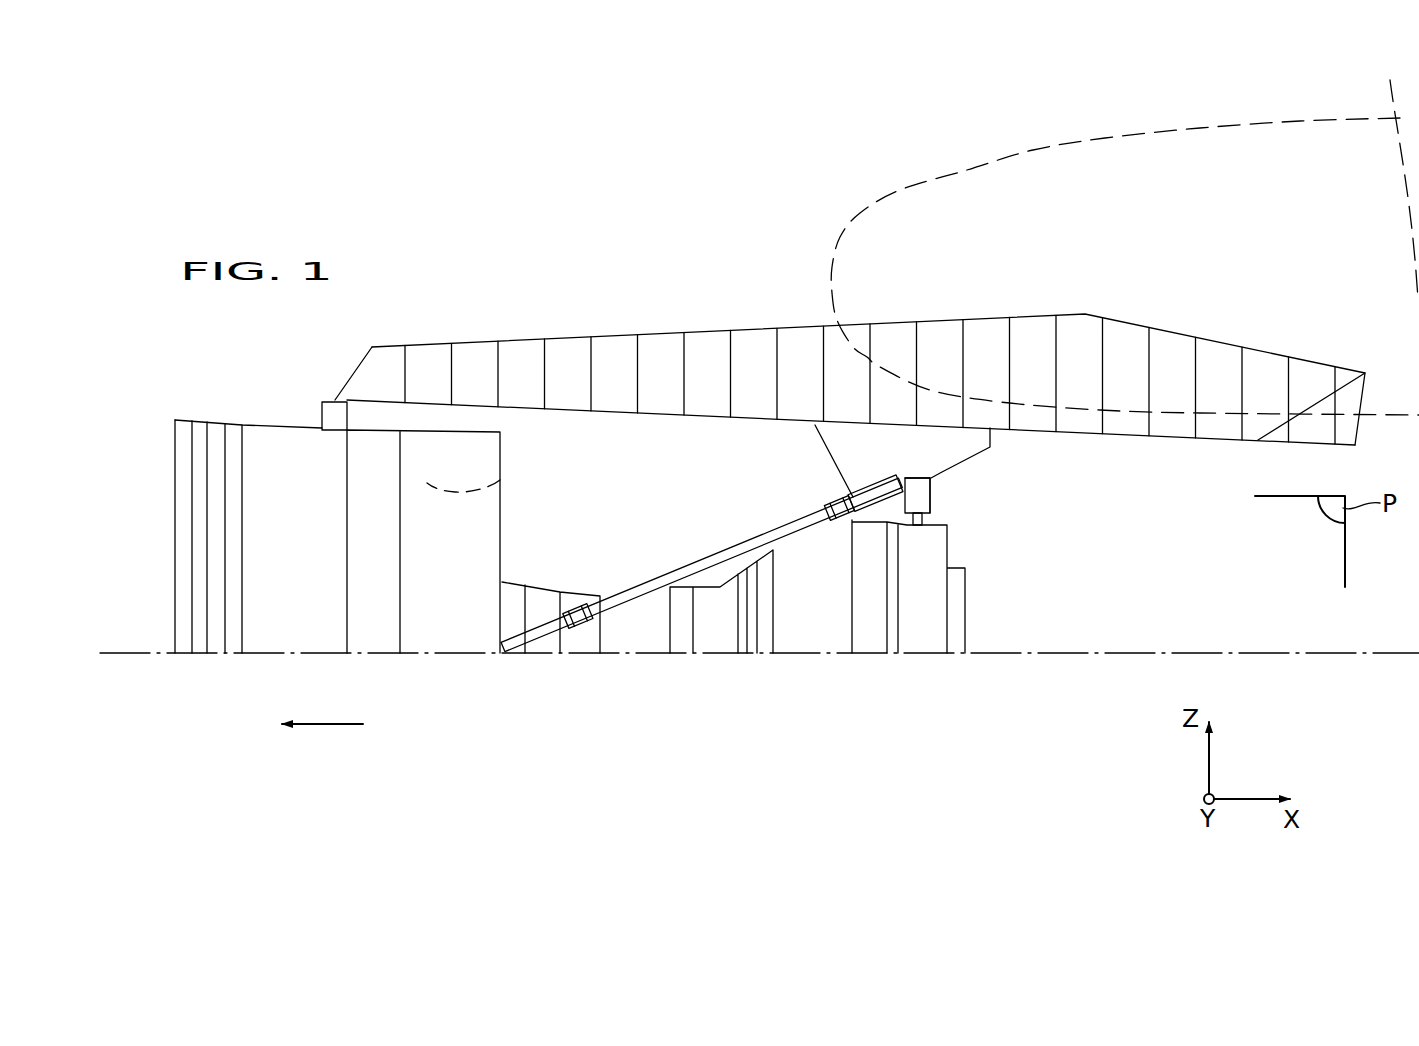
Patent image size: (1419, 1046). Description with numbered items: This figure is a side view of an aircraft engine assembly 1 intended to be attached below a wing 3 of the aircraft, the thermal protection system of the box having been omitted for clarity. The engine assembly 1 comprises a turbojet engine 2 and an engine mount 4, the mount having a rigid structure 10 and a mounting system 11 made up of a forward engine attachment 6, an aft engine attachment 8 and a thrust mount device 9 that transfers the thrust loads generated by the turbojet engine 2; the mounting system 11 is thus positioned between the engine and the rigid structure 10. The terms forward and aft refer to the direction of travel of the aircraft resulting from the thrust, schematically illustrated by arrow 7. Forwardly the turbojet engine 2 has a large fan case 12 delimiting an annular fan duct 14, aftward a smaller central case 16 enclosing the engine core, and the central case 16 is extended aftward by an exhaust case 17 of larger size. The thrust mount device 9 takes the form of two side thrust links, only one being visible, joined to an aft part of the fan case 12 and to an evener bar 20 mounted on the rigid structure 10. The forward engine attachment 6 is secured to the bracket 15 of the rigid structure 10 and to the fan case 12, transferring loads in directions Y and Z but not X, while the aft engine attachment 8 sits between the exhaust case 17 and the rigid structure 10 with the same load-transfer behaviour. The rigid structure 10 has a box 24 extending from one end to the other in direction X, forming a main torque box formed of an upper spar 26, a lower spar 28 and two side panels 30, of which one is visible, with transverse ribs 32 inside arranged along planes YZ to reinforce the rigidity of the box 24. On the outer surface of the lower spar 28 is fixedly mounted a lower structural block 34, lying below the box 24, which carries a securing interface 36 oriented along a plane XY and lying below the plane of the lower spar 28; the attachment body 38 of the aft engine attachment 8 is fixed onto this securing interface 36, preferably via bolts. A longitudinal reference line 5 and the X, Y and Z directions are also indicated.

The aircraft engine assembly 1 is at (472, 730).
The turbojet engine 2 is at (170, 427).
The wing 3 is at (1105, 138).
The engine mount 4 is at (921, 280).
The longitudinal axis of the engine 5 is at (1225, 653).
The forward engine attachment 6 is at (342, 412).
The arrow 7 is at (315, 724).
The aft engine attachment 8 is at (904, 530).
The thrust mount device 9 is at (725, 570).
The rigid structure 10 is at (823, 242).
The mounting system 11 is at (770, 730).
The fan case 12 is at (172, 567).
The annular fan duct 14 is at (500, 480).
The bracket 15 is at (353, 375).
The central case 16 is at (578, 592).
The exhaust case 17 is at (937, 525).
The evener bar 20 is at (877, 502).
The box 24 is at (716, 326).
The upper spar 26 is at (494, 340).
The lower spar 28 is at (610, 410).
The side panels 30 is at (622, 343).
The transverse ribs 32 is at (685, 392).
The lower structural block 34 is at (828, 388).
The securing interface 36 is at (947, 490).
The attachment body 38 is at (920, 500).